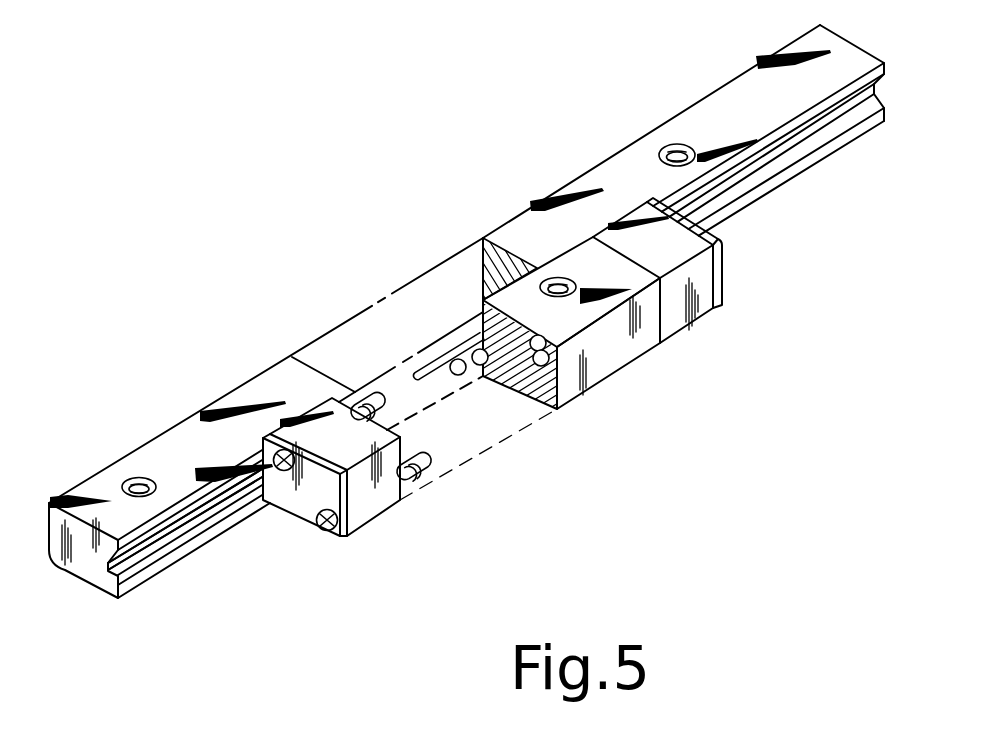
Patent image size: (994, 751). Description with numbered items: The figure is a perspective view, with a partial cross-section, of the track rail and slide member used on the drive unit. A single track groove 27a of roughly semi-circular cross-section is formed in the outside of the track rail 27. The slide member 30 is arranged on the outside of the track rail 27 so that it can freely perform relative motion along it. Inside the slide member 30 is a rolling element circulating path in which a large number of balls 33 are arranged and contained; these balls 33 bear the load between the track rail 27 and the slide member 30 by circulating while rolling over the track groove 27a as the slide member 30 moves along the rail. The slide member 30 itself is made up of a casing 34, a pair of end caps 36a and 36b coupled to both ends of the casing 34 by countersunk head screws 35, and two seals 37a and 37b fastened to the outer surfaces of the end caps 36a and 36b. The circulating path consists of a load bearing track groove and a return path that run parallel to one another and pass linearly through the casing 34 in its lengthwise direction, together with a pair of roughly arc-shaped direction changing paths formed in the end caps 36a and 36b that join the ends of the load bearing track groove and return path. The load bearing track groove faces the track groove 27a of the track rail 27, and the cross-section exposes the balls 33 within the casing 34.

The track rail 27 is at (185, 415).
The track groove 27a is at (168, 549).
The slide member 30 is at (745, 257).
The balls 33 is at (465, 377).
The casing 34 is at (602, 358).
The countersunk head screws 35 is at (283, 472).
The end cap 36a is at (373, 508).
The end cap 36b is at (690, 322).
The seal 37a is at (350, 535).
The seal 37b is at (722, 283).